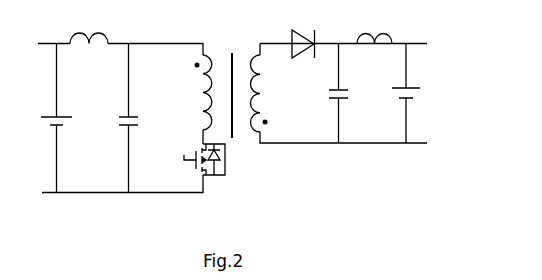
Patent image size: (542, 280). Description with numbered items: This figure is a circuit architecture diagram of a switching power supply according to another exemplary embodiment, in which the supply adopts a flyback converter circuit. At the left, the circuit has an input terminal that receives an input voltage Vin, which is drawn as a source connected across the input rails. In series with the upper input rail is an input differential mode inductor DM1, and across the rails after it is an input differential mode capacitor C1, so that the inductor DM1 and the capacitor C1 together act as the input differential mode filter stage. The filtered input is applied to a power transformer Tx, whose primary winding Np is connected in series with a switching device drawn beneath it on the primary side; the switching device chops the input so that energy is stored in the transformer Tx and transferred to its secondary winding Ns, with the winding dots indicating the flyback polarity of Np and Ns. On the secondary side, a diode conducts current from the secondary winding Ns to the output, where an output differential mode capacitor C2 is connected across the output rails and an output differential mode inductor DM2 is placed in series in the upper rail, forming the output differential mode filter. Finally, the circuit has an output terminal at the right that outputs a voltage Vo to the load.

The input differential mode inductor DM1 is at (92, 27).
The input voltage Vin is at (40, 125).
The input differential mode capacitor C1 is at (115, 125).
The power transformer Tx is at (228, 74).
The primary winding Np is at (194, 92).
The secondary winding Ns is at (269, 93).
The output differential mode capacitor C2 is at (350, 97).
The output differential mode inductor DM2 is at (372, 27).
The output voltage Vo is at (419, 98).